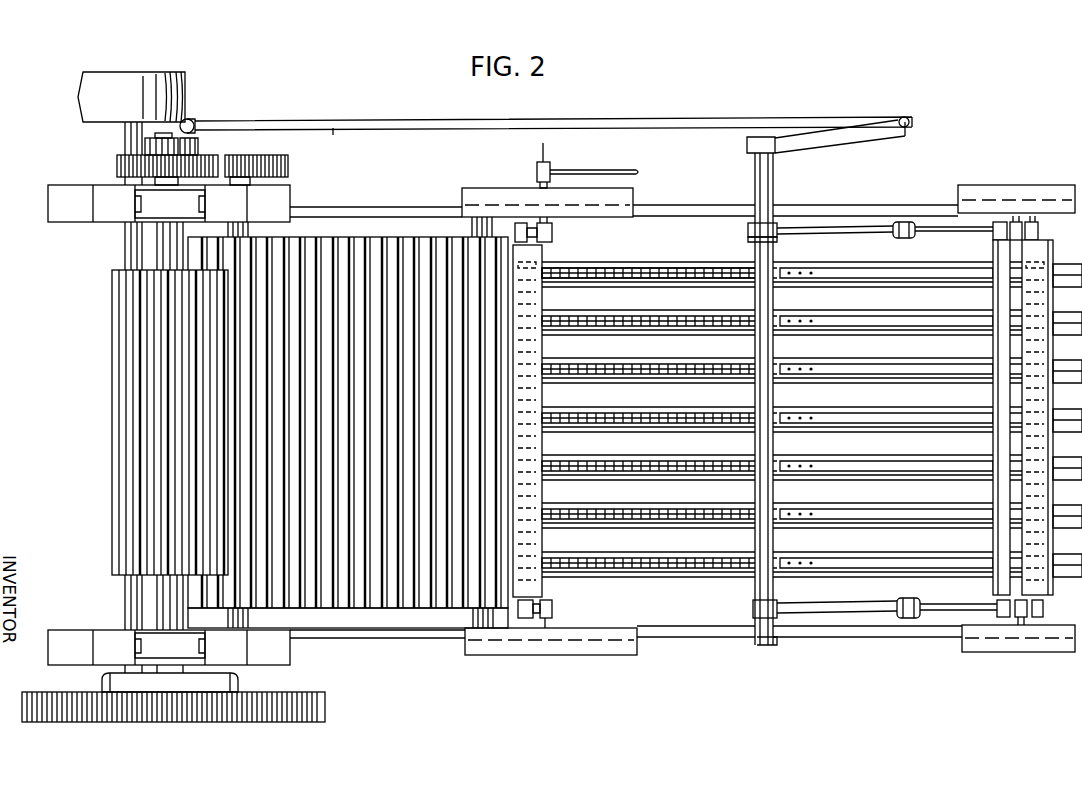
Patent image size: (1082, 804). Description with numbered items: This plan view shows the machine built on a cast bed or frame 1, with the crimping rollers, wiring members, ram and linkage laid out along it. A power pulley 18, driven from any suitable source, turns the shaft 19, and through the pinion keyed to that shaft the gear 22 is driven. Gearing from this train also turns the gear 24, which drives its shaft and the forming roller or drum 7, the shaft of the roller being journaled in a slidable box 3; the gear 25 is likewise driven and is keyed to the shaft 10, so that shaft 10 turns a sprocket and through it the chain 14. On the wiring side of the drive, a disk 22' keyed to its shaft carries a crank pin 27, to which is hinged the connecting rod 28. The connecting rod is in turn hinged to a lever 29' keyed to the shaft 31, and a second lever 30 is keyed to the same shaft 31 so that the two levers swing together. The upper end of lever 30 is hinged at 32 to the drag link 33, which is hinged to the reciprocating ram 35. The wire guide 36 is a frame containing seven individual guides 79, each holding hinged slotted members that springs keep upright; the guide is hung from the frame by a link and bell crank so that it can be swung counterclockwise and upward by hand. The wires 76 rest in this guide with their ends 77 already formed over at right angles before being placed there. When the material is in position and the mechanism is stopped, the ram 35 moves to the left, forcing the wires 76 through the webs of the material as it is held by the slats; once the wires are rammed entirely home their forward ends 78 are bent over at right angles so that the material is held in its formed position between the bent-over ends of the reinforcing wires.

The cast bed or frame 1 is at (682, 633).
The slidable box 3 is at (190, 198).
The forming roller 7 is at (136, 364).
The shaft 10 is at (264, 230).
The chain 14 is at (396, 596).
The power pulley 18 is at (185, 74).
The shaft 19 is at (124, 129).
The gear 22 is at (193, 697).
The disk 22' is at (209, 110).
The gear 24 is at (223, 161).
The gear 25 is at (290, 160).
The crank pin 27 is at (190, 108).
The connecting rod 28 is at (339, 122).
The lever 29' is at (826, 382).
The lever 30 is at (816, 228).
The shaft 31 is at (779, 261).
The hinge 32 is at (894, 222).
The drag link 33 is at (928, 220).
The reciprocating ram 35 is at (992, 290).
The wire guide 36 is at (650, 262).
The wires 76 is at (692, 268).
The ends of the wires 77 is at (771, 318).
The forward ends 78 is at (586, 262).
The individual guides 79 is at (592, 316).